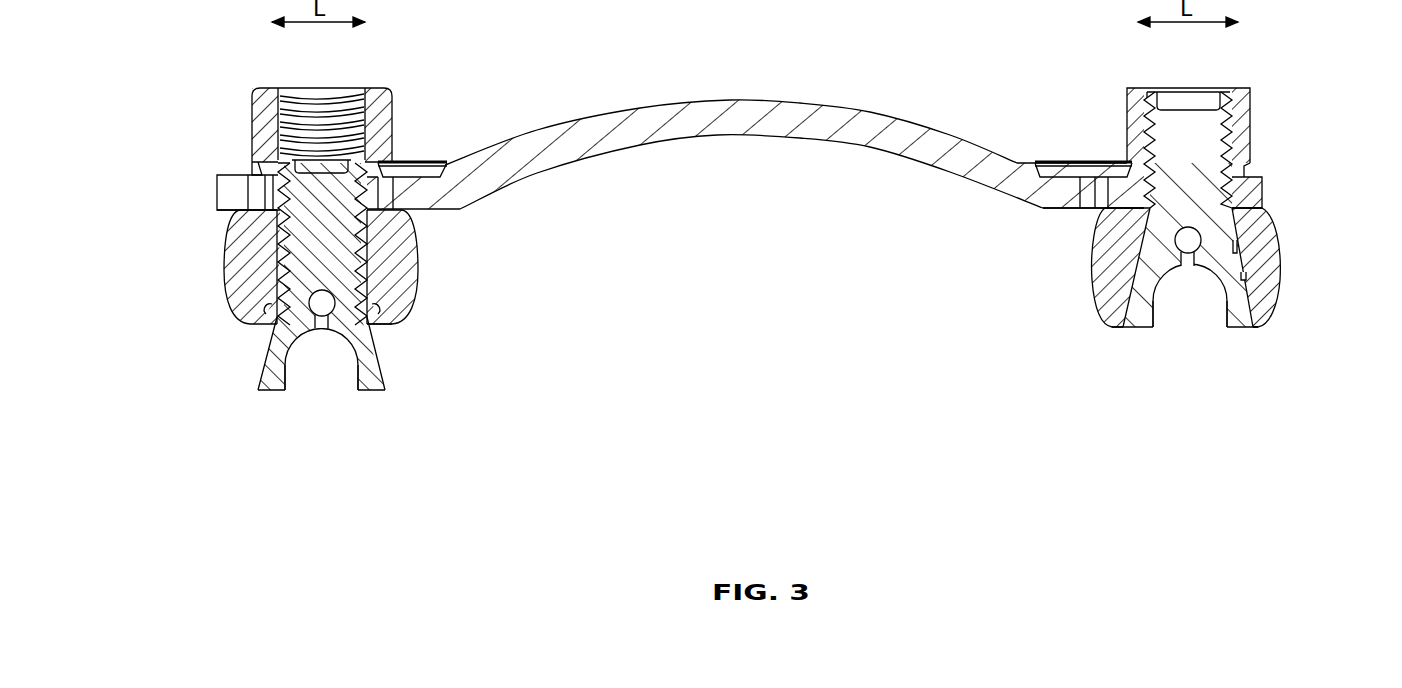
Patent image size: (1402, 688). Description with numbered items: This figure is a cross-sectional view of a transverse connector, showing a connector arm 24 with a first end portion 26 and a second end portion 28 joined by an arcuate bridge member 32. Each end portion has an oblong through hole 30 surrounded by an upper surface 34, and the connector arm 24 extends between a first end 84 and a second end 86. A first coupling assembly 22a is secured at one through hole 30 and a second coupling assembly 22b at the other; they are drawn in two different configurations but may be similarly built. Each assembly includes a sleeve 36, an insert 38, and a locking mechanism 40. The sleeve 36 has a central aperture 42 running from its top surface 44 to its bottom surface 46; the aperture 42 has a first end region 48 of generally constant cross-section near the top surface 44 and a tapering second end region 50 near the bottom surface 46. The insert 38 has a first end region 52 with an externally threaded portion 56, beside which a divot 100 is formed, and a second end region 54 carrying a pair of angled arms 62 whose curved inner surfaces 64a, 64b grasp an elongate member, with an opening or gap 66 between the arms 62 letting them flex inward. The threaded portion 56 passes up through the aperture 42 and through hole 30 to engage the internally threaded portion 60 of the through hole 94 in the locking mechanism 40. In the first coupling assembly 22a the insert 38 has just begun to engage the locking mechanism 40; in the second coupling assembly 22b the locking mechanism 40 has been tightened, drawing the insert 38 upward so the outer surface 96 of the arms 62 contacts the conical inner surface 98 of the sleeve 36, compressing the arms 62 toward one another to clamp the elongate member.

The first coupling assembly 22a is at (231, 84).
The second coupling assembly 22b is at (1294, 42).
The connector arm 24 is at (738, 100).
The first end portion 26 is at (218, 181).
The second end portion 28 is at (1256, 185).
The through hole 30 is at (395, 205).
The bridge member 32 is at (720, 130).
The upper surface 34 is at (420, 168).
The sleeve 36 is at (408, 262).
The insert 38 is at (362, 296).
The locking mechanism 40 is at (382, 118).
The central aperture 42 is at (265, 258).
The top surface 44 is at (236, 209).
The bottom surface 46 is at (393, 320).
The first end region 48 is at (276, 222).
The second end region 50 is at (265, 288).
The first end region 52 is at (282, 168).
The second end region 54 is at (360, 390).
The threaded portion 56 is at (397, 183).
The threaded portion 60 is at (370, 98).
The arms 62 is at (268, 392).
The first curved inner surface 64a is at (288, 373).
The second curved inner surface 64b is at (350, 342).
The opening or gap 66 is at (316, 326).
The first end 84 is at (217, 190).
The second end 86 is at (1263, 200).
The through hole 94 is at (348, 90).
The outer surface 96 is at (268, 372).
The inner surface 98 is at (265, 312).
The divot 100 is at (322, 166).